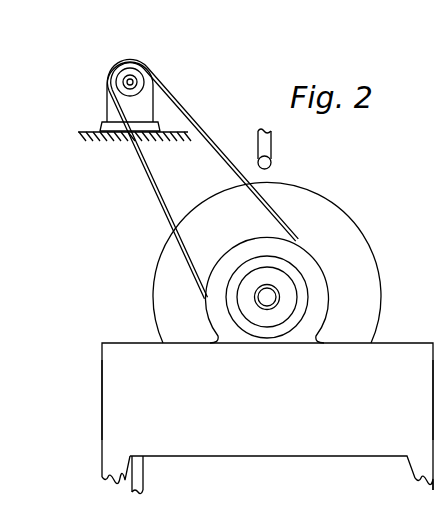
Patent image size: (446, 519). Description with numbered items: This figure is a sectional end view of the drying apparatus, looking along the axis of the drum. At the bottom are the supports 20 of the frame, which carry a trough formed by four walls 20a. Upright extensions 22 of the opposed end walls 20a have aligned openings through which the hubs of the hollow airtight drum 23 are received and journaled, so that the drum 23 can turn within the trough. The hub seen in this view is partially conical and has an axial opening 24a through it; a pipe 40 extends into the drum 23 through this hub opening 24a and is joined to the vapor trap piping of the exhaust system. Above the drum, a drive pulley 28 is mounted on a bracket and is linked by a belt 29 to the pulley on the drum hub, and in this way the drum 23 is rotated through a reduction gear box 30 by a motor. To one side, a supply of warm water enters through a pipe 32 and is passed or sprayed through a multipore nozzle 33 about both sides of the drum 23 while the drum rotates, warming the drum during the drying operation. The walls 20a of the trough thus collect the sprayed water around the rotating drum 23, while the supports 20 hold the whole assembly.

The supports 20 is at (267, 427).
The walls 20a is at (102, 428).
The upright extensions 22 is at (303, 319).
The hollow airtight drum 23 is at (372, 252).
The axial opening 24a is at (263, 300).
The drive pulley 28 is at (140, 72).
The belt 29 is at (214, 143).
The reduction gear box 30 is at (107, 100).
The pipe 32 is at (272, 136).
The multipore nozzle 33 is at (271, 160).
The pipe 40 is at (272, 306).